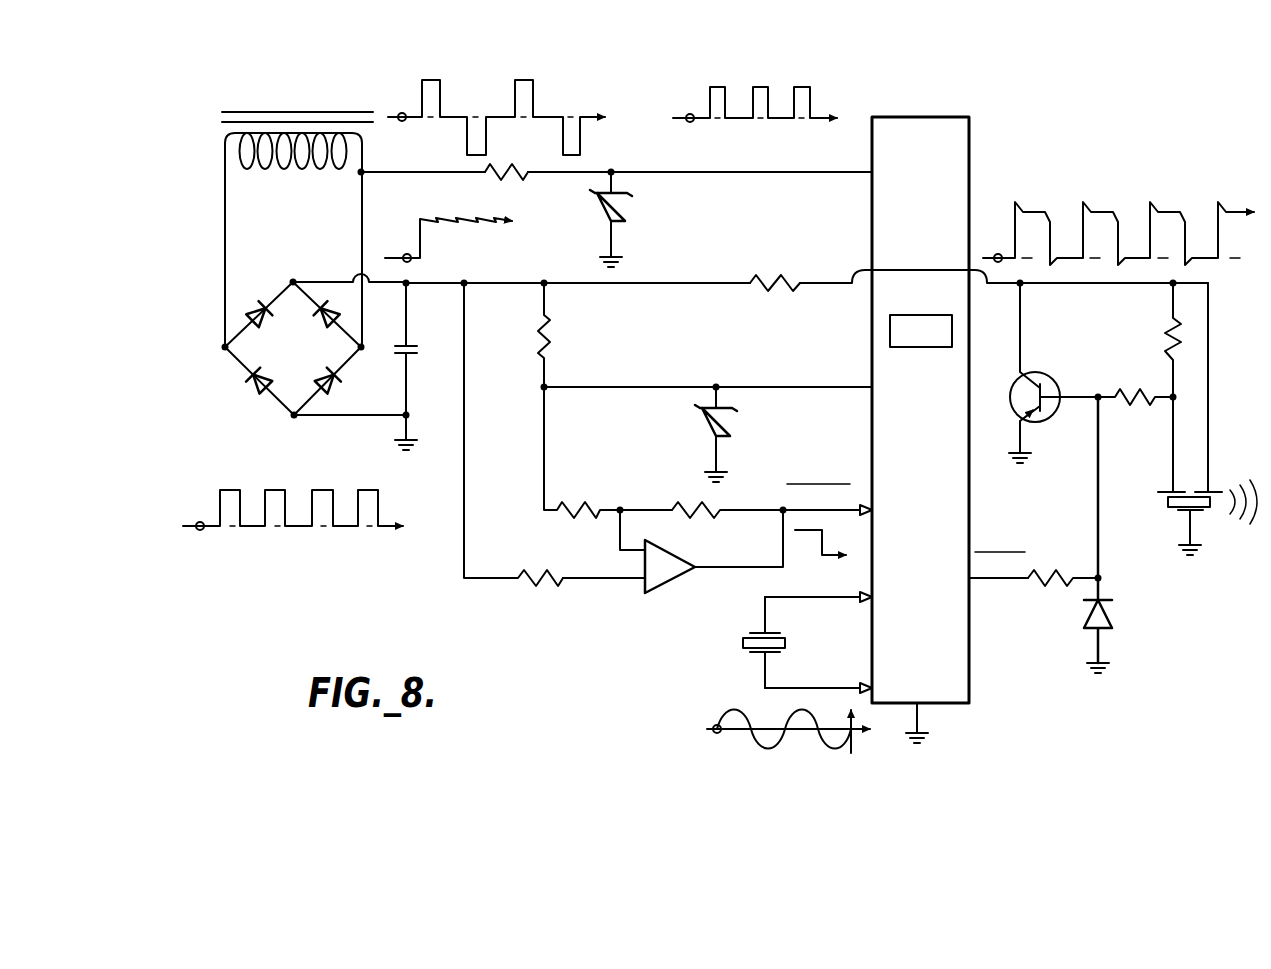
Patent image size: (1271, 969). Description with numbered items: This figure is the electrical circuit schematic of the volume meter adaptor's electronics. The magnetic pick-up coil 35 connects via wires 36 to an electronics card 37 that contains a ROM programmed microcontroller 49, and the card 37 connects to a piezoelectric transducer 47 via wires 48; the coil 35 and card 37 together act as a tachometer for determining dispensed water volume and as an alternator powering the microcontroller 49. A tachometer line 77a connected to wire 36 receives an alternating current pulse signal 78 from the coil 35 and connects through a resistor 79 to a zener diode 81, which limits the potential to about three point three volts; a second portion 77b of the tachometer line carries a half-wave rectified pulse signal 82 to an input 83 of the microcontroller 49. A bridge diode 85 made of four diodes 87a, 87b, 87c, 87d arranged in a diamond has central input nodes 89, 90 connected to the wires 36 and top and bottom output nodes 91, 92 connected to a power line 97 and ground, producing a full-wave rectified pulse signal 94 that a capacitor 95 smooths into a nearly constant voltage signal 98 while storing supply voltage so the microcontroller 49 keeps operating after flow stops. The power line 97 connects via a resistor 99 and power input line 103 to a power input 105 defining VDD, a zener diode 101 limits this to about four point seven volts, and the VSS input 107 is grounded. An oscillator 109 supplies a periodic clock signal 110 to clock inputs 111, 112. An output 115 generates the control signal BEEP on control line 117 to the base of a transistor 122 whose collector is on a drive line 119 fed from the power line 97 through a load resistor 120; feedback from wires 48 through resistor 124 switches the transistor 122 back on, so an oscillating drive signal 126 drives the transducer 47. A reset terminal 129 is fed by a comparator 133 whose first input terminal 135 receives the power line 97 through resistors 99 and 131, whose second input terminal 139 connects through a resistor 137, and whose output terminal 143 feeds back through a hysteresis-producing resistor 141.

The magnetic pick-up coil 35 is at (263, 112).
The wires 36 is at (225, 213).
The electronics card 37 is at (622, 50).
The piezoelectric transducer 47 is at (1168, 502).
The wires 48 is at (1173, 465).
The ROM programmed microcontroller 49 is at (958, 117).
The tachometer line 77a is at (393, 172).
The second portion of the tachometer line 77b is at (735, 172).
The alternating current pulse signal 78 is at (487, 83).
The resistor 79 is at (500, 165).
The zener diode 81 is at (626, 214).
The half-wave rectified pulse signal 82 is at (757, 72).
The input 83 is at (874, 172).
The bridge diode 85 is at (284, 357).
The diode 87a is at (253, 395).
The diode 87b is at (337, 395).
The diode 87c is at (241, 310).
The diode 87d is at (318, 328).
The central input node 89 is at (225, 347).
The central input node 90 is at (361, 347).
The top output node 91 is at (293, 282).
The bottom output node 92 is at (294, 415).
The full-wave rectified pulse signal 94 is at (251, 486).
The capacitor 95 is at (411, 350).
The power line 97 is at (514, 283).
The nearly constant voltage signal 98 is at (447, 214).
The resistor 99 is at (553, 326).
The zener diode 101 is at (732, 429).
The power input line 103 is at (600, 387).
The power input 105 is at (874, 387).
The source reference voltage input 107 is at (917, 700).
The oscillator 109 is at (782, 636).
The periodic clock signal 110 is at (731, 698).
The clock input 111 is at (877, 595).
The clock input 112 is at (873, 688).
The output 115 is at (968, 575).
The control line 117 is at (1094, 575).
The drive line 119 is at (800, 290).
The load resistor 120 is at (770, 276).
The transistor 122 is at (1048, 378).
The resistor 124 is at (1115, 390).
The drive signal 126 is at (1097, 176).
The reset terminal 129 is at (877, 505).
The resistor 131 is at (578, 505).
The comparator 133 is at (666, 588).
The first input terminal 135 is at (619, 548).
The resistor 137 is at (536, 571).
The second input terminal 139 is at (575, 580).
The hysteresis-producing resistor 141 is at (715, 505).
The output terminal 143 is at (719, 567).